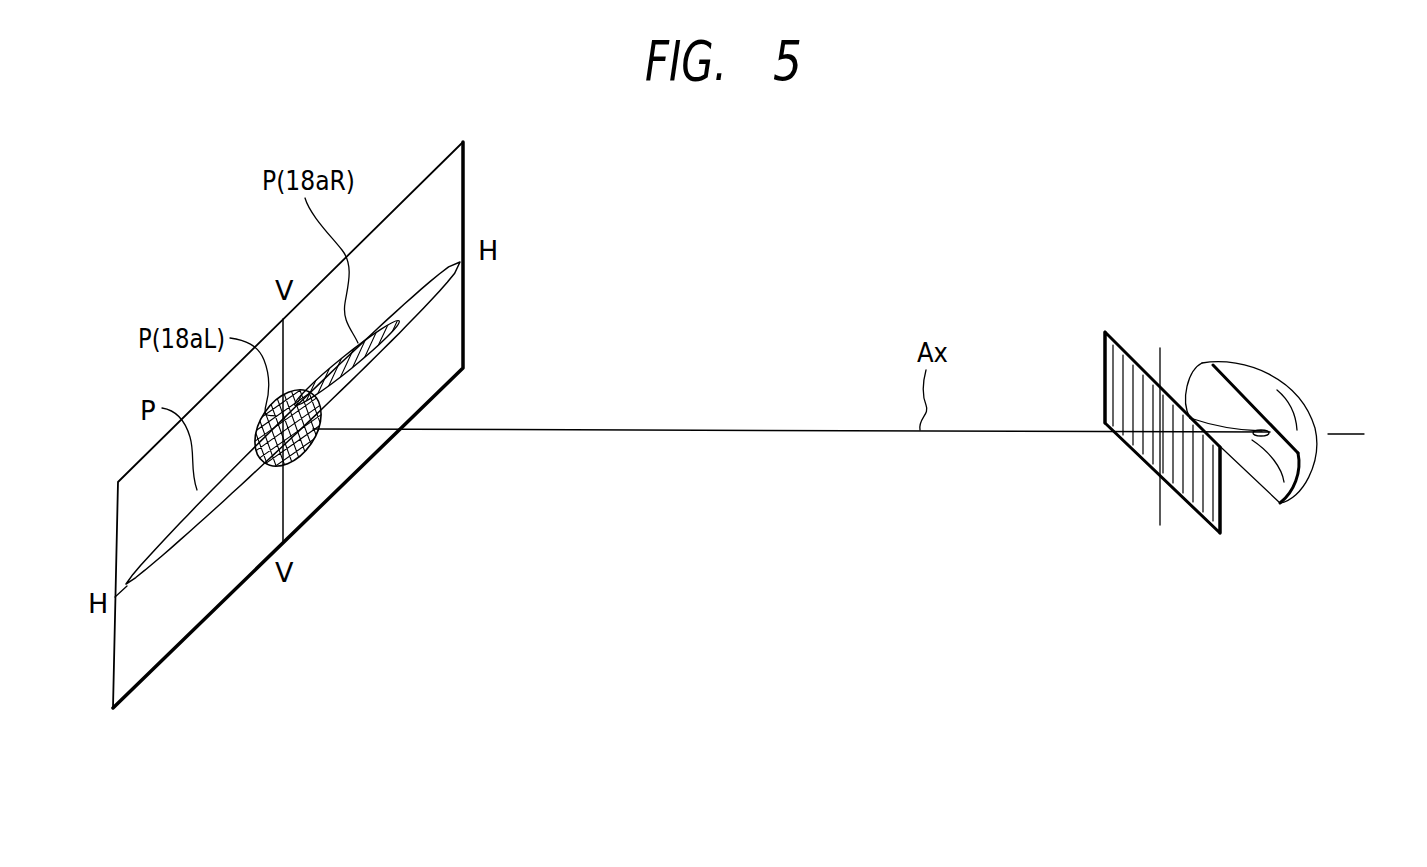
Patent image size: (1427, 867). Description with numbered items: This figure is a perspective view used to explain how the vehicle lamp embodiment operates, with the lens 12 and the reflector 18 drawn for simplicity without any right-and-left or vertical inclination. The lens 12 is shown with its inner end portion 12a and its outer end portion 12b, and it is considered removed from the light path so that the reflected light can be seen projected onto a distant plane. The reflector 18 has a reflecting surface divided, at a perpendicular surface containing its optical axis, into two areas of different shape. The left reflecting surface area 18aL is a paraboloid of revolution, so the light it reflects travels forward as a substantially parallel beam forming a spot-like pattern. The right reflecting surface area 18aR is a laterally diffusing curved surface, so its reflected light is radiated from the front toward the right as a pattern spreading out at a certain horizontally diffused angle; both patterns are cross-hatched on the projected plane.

The lens 12 is at (1096, 334).
The inner end portion 12a is at (1221, 498).
The outer end portion 12b is at (1105, 385).
The reflector 18 is at (1301, 402).
The right reflecting surface area 18aR is at (1207, 387).
The left reflecting surface area 18aL is at (1290, 453).